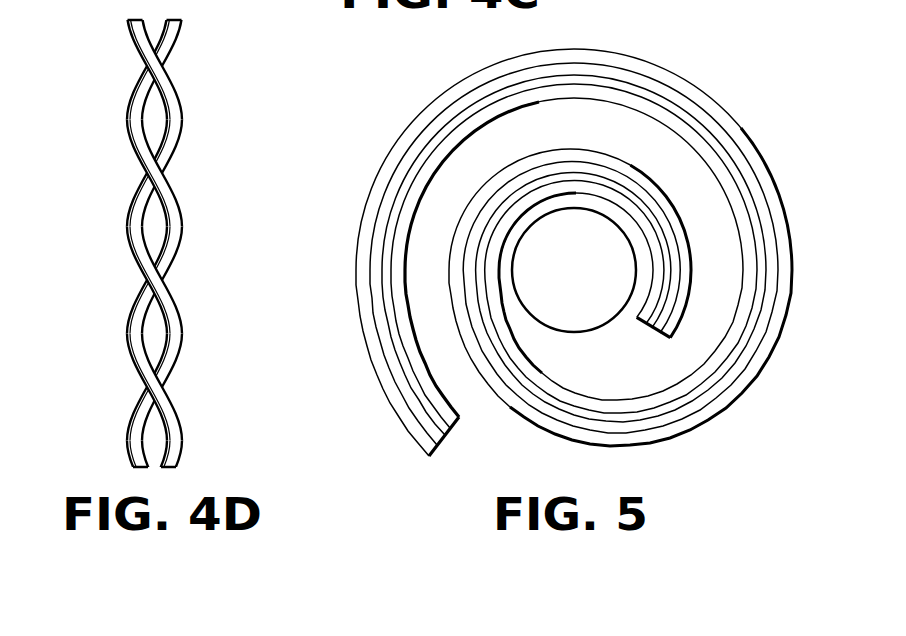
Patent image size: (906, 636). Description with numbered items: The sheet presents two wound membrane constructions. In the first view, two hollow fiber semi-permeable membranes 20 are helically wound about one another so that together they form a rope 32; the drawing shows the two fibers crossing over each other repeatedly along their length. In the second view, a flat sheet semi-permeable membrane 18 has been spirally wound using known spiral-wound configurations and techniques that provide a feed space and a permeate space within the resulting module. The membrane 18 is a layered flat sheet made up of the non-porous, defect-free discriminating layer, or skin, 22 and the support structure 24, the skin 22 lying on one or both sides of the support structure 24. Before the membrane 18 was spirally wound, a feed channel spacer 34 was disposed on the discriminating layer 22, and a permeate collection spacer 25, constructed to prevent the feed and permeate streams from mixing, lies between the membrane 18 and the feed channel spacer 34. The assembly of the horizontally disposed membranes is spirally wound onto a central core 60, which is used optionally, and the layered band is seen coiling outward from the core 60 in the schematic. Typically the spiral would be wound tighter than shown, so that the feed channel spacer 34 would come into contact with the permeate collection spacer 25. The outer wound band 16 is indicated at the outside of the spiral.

In FIG. 5, the spiral wound band 16 is at (535, 252).
In FIG. 5, the semi-permeable membrane 18 is at (535, 245).
In FIG. 4D, the hollow fiber semi-permeable membrane 20 is at (138, 255).
In FIG. 5, the discriminating layer 22 is at (402, 345).
In FIG. 5, the support structure 24 is at (376, 272).
In FIG. 5, the permeate collection spacer 25 is at (364, 221).
In FIG. 4D, the rope 32 is at (169, 280).
In FIG. 5, the feed channel spacer 34 is at (537, 101).
In FIG. 5, the core 60 is at (572, 333).